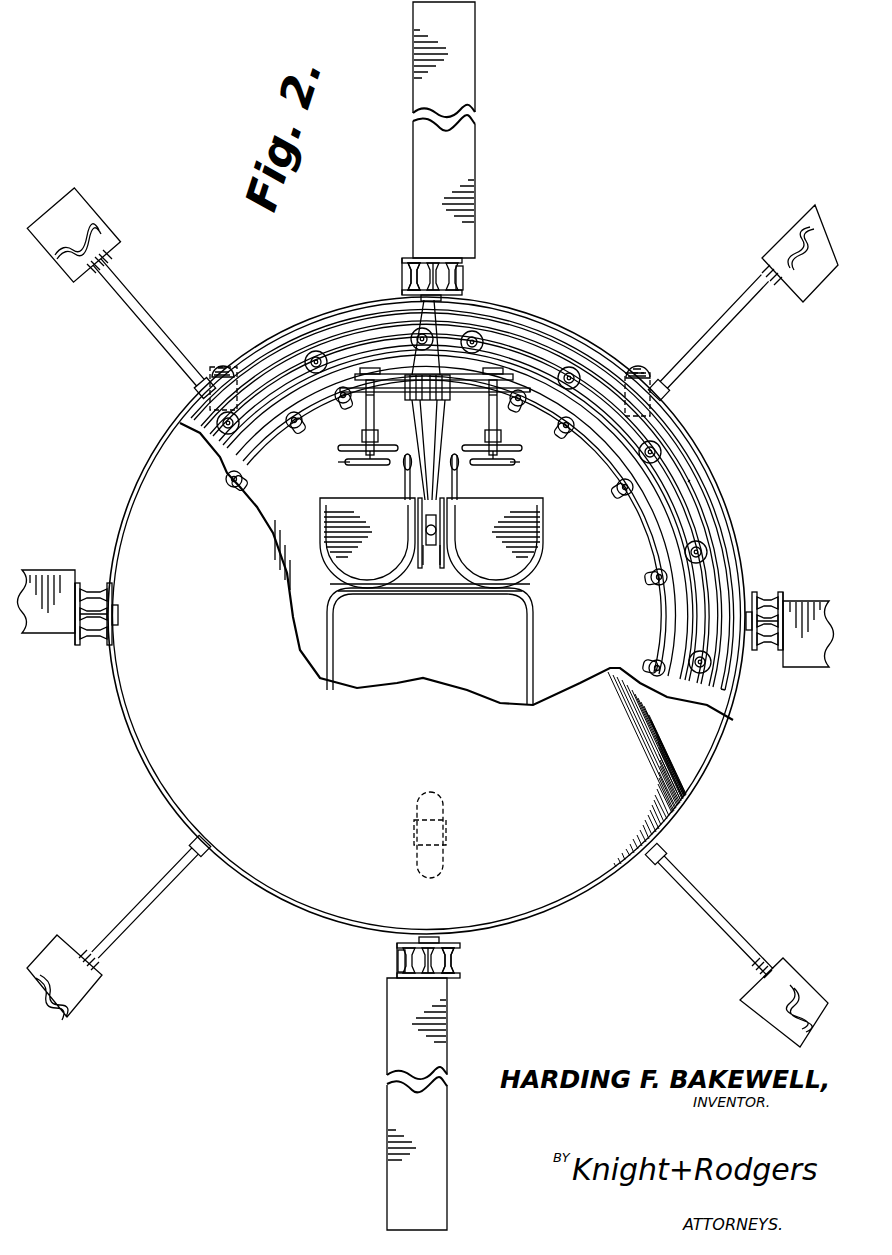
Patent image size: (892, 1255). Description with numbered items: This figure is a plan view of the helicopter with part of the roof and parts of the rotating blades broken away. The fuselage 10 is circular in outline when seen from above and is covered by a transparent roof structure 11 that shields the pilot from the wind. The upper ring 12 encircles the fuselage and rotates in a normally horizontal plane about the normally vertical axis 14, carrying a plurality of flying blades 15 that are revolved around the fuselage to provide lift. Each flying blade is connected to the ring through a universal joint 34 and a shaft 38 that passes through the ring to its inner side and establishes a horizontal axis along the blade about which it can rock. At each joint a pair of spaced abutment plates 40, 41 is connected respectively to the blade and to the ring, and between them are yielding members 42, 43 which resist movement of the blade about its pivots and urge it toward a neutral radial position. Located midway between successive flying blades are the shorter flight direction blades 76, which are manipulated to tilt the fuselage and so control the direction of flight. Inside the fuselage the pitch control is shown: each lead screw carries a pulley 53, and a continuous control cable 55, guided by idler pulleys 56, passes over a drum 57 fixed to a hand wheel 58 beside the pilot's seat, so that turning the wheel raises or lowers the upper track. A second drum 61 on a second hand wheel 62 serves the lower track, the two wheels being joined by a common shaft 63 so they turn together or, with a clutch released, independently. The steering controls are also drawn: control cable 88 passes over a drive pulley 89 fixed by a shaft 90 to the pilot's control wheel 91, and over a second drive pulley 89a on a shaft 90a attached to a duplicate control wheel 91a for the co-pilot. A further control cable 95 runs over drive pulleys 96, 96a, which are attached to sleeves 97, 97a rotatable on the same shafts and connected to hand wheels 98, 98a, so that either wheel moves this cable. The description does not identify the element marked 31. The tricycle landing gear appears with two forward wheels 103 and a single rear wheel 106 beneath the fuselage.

The fuselage 10 is at (184, 398).
The transparent roof structure 11 is at (456, 645).
The upper ring 12 is at (375, 297).
The axis 14 is at (820, 668).
The flying blades 15 is at (413, 60).
The chute 31 is at (528, 626).
The universal joint 34 is at (470, 284).
The shaft 38 is at (426, 320).
The abutment plate 40 is at (434, 262).
The abutment plate 41 is at (408, 262).
The yielding members 42 is at (402, 272).
The yielding member 43 is at (468, 272).
The pulley 53 is at (480, 335).
The control cable 55 is at (700, 495).
The idler pulleys 56 is at (688, 554).
The drum 57 is at (443, 560).
The hand wheel 58 is at (454, 534).
The drum 61 is at (424, 558).
The hand wheel 62 is at (414, 540).
The common shaft 63 is at (448, 538).
The flight direction blades 76 is at (104, 222).
The control cable 88 is at (393, 368).
The drive pulley 89 is at (517, 388).
The second drive pulley 89a is at (370, 372).
The shaft 90 is at (484, 465).
The shaft 90a is at (380, 464).
The control wheel 91 is at (518, 464).
The duplicate control wheel 91a is at (345, 462).
The control cable 95 is at (442, 402).
The drive pulley 96 is at (497, 410).
The drive pulley 96a is at (374, 404).
The sleeve 97 is at (489, 404).
The sleeve 97a is at (366, 405).
The hand wheel 98 is at (522, 448).
The hand wheel 98a is at (340, 446).
The forward wheels 103 is at (225, 360).
The rear wheel 106 is at (416, 841).